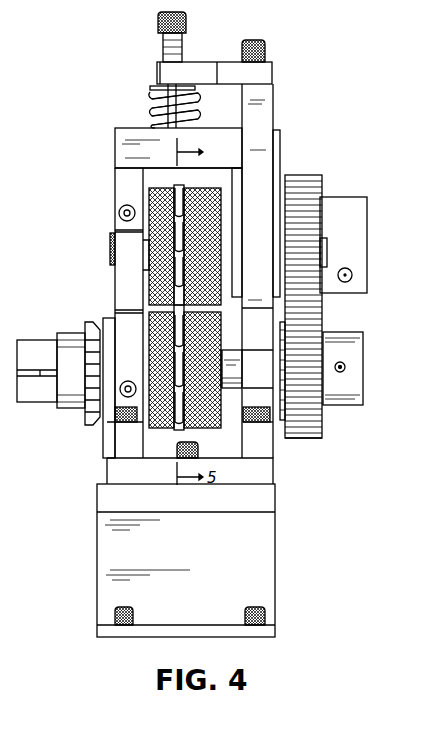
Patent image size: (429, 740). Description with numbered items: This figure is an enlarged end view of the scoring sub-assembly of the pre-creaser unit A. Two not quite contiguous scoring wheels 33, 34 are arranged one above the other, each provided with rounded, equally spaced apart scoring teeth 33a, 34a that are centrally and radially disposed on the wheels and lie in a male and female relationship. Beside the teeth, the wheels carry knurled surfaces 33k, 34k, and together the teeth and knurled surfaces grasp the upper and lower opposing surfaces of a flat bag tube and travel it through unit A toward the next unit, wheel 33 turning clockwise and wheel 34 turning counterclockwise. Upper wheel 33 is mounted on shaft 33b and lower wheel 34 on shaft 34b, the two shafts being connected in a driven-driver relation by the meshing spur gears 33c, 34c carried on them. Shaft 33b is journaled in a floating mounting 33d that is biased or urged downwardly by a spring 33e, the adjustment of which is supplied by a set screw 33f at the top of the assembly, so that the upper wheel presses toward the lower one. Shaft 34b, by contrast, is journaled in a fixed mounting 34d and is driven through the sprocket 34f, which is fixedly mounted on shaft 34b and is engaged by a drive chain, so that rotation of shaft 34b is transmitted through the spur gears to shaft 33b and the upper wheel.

The set screw 33f is at (157, 22).
The spring 33e is at (150, 97).
The floating mounting 33d is at (113, 143).
The knurled surface 33k is at (160, 192).
The scoring teeth 33a is at (172, 198).
The scoring wheel 33 is at (197, 220).
The shaft 33b is at (109, 247).
The spur gear 33c is at (306, 176).
The sprocket 34f is at (92, 335).
The scoring teeth 34a is at (178, 405).
The knurled surface 34k is at (160, 428).
The scoring wheel 34 is at (213, 430).
The shaft 34b is at (232, 352).
The fixed mounting 34d is at (345, 366).
The spur gear 34c is at (320, 438).
The pre-creaser unit A is at (275, 108).